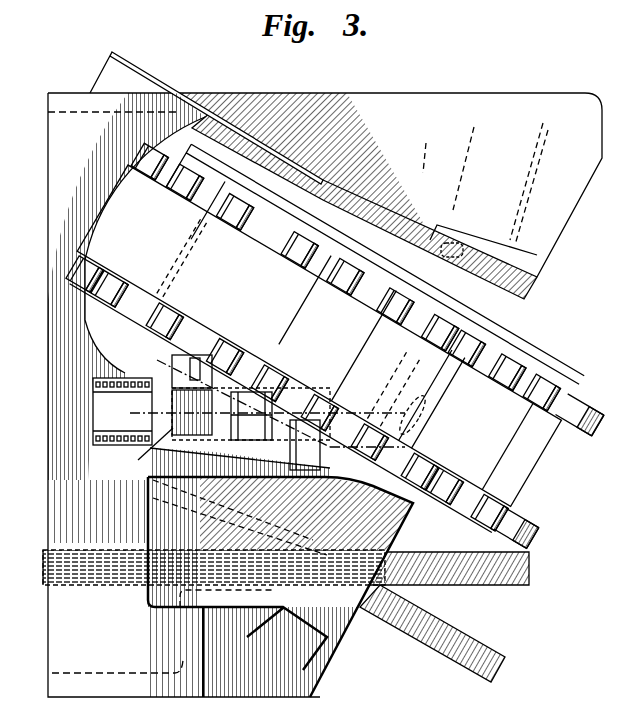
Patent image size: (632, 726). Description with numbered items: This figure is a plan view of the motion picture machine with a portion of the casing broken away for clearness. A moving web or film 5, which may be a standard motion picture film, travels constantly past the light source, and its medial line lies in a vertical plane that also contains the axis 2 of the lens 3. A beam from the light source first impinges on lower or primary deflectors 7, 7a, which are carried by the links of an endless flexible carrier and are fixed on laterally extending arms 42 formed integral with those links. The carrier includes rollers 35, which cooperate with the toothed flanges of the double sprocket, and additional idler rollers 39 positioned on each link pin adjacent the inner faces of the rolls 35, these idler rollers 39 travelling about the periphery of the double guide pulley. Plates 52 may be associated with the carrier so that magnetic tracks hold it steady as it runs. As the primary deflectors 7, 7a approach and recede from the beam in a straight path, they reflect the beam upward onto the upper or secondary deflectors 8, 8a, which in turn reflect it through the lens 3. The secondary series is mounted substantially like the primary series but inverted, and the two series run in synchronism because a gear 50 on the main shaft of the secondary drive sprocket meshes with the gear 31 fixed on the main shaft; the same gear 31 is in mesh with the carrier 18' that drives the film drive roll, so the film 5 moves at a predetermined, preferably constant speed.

The axis 2 is at (360, 413).
The lens 3 is at (412, 412).
The web or film 5 is at (136, 413).
The primary deflector 7 is at (254, 431).
The primary deflector 7a is at (145, 451).
The secondary deflector 8 is at (241, 421).
The secondary deflector 8a is at (172, 374).
The carrier 18' is at (194, 582).
The gear 31 is at (529, 577).
The rollers 35 is at (123, 306).
The idler rollers 39 is at (207, 210).
The arms 42 is at (200, 357).
The gear 50 is at (505, 668).
The plates 52 is at (339, 337).